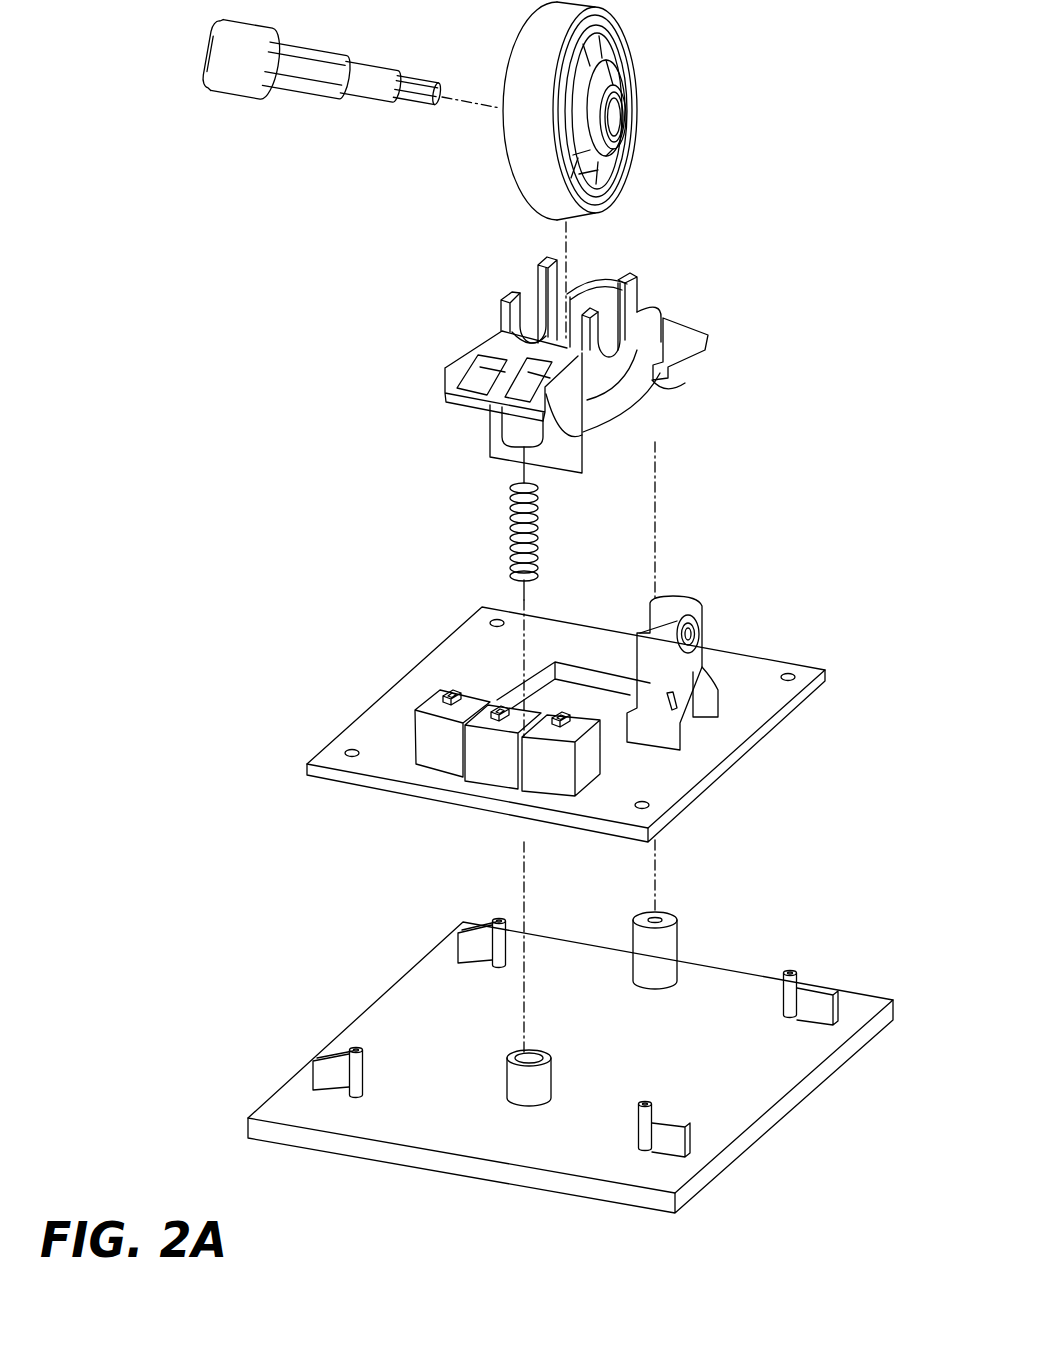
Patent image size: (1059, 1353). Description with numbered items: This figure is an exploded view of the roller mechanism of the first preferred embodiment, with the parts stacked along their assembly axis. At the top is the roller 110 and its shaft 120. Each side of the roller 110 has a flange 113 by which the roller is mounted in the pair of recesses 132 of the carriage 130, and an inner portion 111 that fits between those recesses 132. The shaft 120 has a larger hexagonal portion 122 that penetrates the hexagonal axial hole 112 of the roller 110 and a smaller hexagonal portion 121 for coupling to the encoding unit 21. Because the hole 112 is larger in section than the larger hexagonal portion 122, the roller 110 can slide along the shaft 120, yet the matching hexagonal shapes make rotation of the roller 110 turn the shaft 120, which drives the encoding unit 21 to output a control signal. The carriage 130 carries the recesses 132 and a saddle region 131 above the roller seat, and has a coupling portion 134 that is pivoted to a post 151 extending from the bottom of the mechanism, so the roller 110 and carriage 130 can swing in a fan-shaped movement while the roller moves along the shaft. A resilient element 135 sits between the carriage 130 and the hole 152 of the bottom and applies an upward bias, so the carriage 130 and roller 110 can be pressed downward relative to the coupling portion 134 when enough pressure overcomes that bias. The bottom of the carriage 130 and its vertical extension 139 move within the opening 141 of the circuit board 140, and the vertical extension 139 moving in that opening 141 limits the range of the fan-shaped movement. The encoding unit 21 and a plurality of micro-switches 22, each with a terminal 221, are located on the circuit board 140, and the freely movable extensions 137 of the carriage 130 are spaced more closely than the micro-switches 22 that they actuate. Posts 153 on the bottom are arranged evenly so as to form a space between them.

The roller 110 is at (607, 110).
The inner portion 111 is at (612, 168).
The hexagonal axial hole 112 is at (614, 121).
The flange 113 is at (613, 143).
The shaft 120 is at (350, 103).
The smaller hexagonal portion 121 is at (417, 80).
The larger hexagonal portion 122 is at (313, 67).
The carriage 130 is at (530, 375).
The bearing seat 131 is at (592, 292).
The recesses 132 is at (541, 312).
The coupling portion 134 is at (670, 383).
The resilient element 135 is at (508, 542).
The extensions 137 is at (448, 418).
The vertical extension 139 is at (545, 453).
The circuit board 140 is at (525, 697).
The opening 141 is at (573, 693).
The encoding unit 21 is at (699, 620).
The micro-switches 22 is at (473, 695).
The switch terminals 221 is at (446, 690).
The post 151 is at (668, 945).
The hole 152 is at (517, 1078).
The posts 153 is at (493, 920).